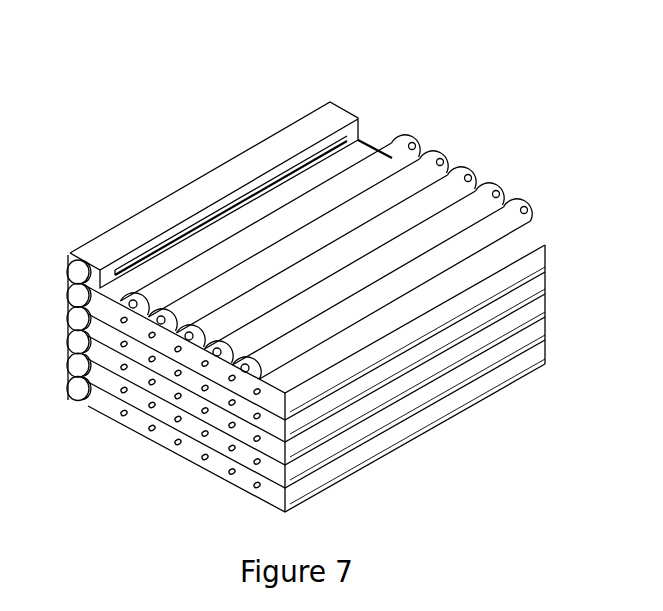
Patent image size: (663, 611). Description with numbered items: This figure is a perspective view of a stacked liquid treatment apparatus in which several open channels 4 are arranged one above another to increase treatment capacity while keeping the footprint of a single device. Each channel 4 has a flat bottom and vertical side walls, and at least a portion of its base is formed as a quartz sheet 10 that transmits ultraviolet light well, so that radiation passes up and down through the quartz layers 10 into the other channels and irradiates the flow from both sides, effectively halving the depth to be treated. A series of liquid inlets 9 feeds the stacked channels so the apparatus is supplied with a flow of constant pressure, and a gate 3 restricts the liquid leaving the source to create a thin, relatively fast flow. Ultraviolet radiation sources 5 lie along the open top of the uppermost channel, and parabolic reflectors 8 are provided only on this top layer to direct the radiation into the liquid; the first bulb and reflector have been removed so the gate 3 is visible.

The gate 3 is at (362, 140).
The channel 4 is at (385, 167).
The ultraviolet radiation sources 5 is at (152, 427).
The parabolic reflectors 8 is at (457, 188).
The liquid inlets 9 is at (66, 318).
The quartz sheet 10 is at (373, 457).